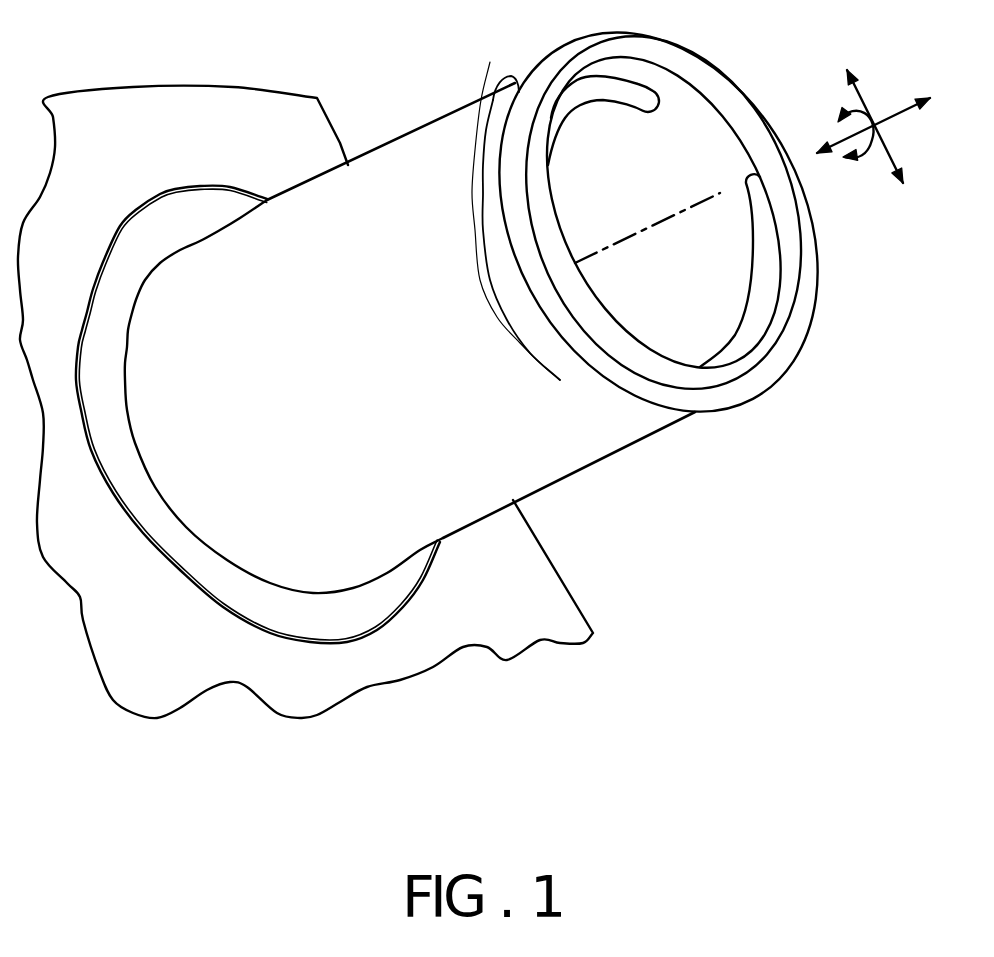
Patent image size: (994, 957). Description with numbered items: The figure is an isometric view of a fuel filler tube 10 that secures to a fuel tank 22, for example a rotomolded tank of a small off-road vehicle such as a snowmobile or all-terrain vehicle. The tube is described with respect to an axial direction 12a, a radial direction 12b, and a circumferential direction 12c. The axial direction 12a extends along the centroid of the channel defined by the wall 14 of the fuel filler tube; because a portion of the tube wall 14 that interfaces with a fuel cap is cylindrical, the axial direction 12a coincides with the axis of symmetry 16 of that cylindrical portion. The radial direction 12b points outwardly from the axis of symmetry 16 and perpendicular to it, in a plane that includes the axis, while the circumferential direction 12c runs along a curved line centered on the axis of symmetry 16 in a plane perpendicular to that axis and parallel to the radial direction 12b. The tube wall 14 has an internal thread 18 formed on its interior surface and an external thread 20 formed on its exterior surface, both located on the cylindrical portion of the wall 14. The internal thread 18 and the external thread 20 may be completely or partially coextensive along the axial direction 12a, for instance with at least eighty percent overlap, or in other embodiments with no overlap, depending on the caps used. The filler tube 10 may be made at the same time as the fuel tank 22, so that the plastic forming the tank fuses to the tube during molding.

The fuel filler tube 10 is at (478, 321).
The axial direction 12a is at (907, 111).
The radial direction 12b is at (853, 85).
The circumferential direction 12c is at (837, 123).
The wall 14 is at (417, 153).
The axis of symmetry 16 is at (657, 223).
The internal thread 18 is at (760, 272).
The external thread 20 is at (493, 137).
The fuel tank 22 is at (103, 108).